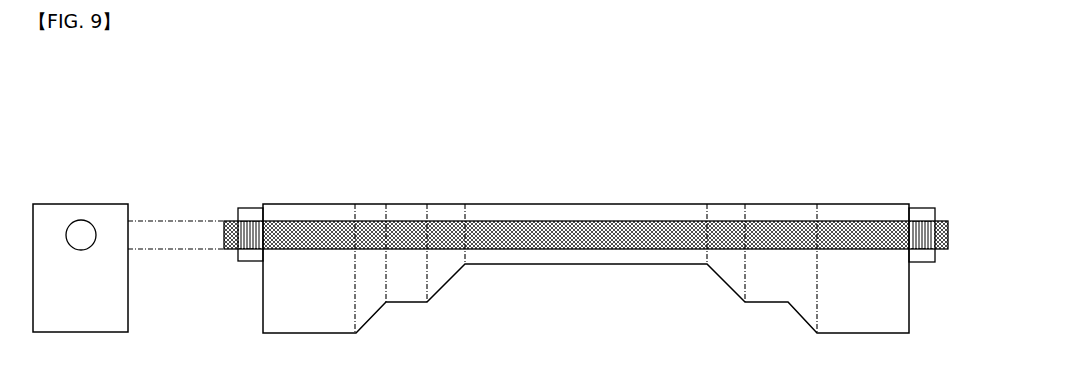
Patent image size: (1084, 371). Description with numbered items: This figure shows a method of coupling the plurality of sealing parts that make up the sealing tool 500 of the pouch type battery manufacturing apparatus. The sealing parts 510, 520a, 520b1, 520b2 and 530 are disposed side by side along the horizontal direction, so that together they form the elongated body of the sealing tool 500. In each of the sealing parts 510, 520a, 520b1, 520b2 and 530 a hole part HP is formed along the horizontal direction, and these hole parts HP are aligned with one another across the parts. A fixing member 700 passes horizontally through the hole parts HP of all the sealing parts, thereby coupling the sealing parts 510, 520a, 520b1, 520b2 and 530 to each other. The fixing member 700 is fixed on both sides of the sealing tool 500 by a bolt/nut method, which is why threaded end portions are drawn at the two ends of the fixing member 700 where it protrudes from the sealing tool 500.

The sealing tool 500 is at (522, 130).
The sealing part 510 is at (504, 206).
The sealing part 520a is at (452, 206).
The sealing part 520b1 is at (406, 206).
The sealing part 520b2 is at (370, 206).
The sealing part 530 is at (302, 206).
The fixing member 700 is at (613, 232).
The hole part HP is at (81, 226).